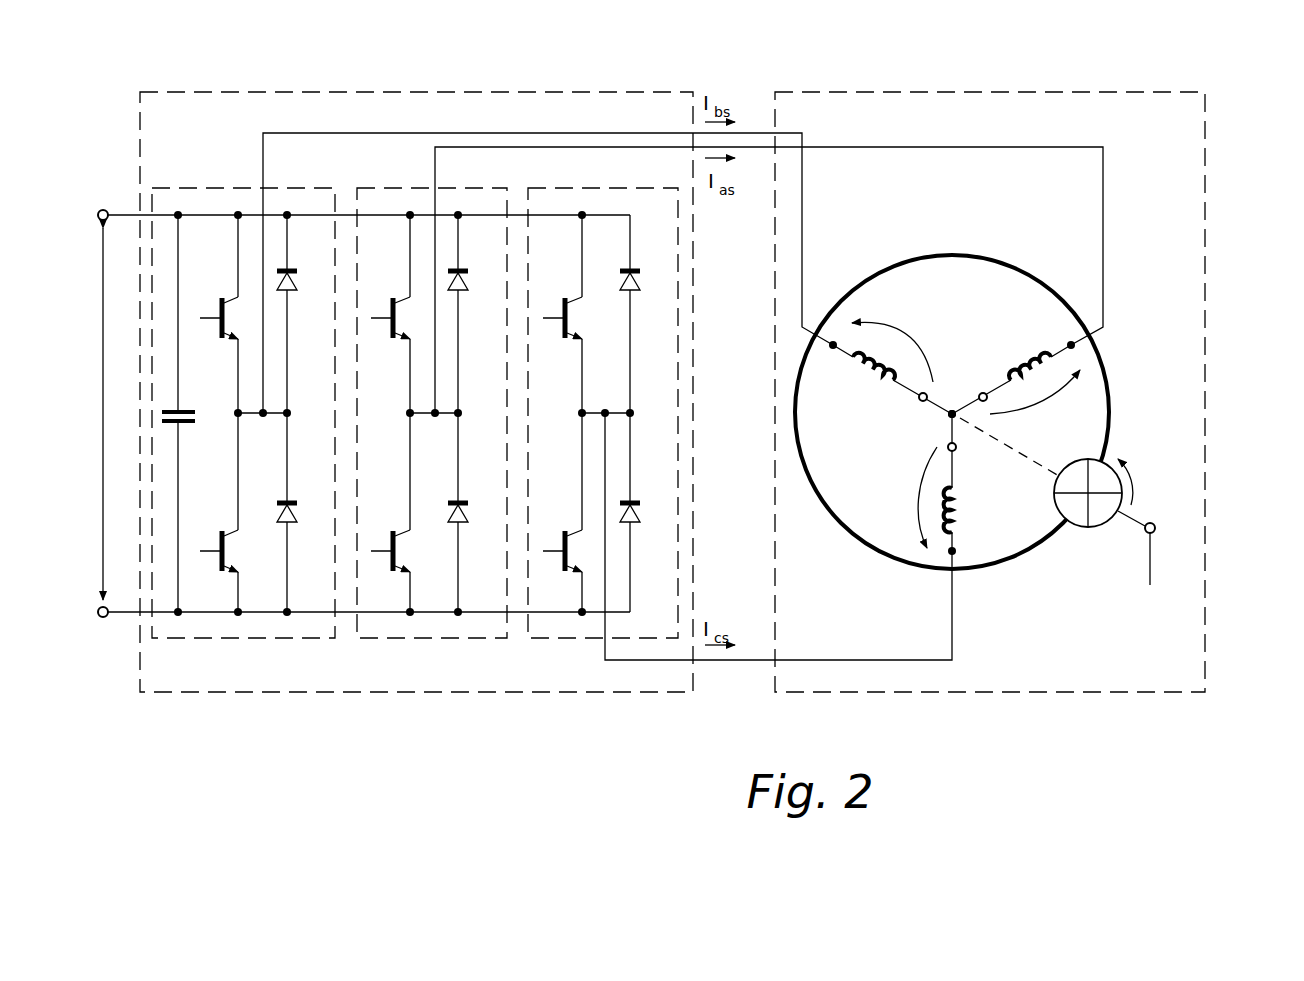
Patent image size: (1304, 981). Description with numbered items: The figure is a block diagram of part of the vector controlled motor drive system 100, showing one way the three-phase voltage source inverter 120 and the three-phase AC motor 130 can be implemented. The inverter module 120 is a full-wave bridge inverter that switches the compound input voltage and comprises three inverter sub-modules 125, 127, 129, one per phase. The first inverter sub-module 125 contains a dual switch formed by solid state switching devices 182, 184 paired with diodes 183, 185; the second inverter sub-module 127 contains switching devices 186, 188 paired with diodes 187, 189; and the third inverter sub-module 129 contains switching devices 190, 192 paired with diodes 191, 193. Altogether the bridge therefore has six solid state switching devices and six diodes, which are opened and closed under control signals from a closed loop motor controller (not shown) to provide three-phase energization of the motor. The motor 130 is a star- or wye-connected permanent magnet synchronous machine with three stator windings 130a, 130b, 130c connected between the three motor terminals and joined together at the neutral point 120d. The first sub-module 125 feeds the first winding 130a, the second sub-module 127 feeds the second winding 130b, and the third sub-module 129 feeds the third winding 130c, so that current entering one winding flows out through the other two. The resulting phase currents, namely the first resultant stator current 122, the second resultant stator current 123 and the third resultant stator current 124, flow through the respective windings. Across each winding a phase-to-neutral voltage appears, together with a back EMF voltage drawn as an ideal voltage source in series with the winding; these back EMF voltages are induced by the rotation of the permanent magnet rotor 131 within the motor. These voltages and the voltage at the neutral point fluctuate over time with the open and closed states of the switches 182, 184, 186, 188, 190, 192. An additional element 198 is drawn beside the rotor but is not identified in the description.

The vector controlled motor drive system 100 is at (1225, 100).
The three-phase PWM inverter module 120 is at (615, 92).
The neutral point 120d is at (952, 411).
The first resultant stator current 122 is at (802, 210).
The second resultant stator current 123 is at (867, 660).
The third resultant stator current 124 is at (880, 148).
The first inverter sub-module 125 is at (293, 188).
The second inverter sub-module 127 is at (465, 188).
The third inverter sub-module 129 is at (635, 188).
The three-phase AC motor 130 is at (1018, 92).
The stator winding A 130a is at (877, 372).
The stator winding B 130b is at (1038, 370).
The stator winding C 130c is at (958, 500).
The permanent magnet rotor 131 is at (1089, 527).
The solid state switching device 182 is at (221, 300).
The diode 183 is at (297, 271).
The solid state switching device 184 is at (221, 533).
The diode 185 is at (297, 503).
The solid state switching device 186 is at (392, 300).
The diode 187 is at (468, 271).
The solid state switching device 188 is at (392, 533).
The diode 189 is at (468, 503).
The solid state switching device 190 is at (577, 322).
The diode 191 is at (617, 271).
The solid state switching device 192 is at (564, 533).
The diode 193 is at (640, 503).
The rotor position sensor 198 is at (1155, 522).